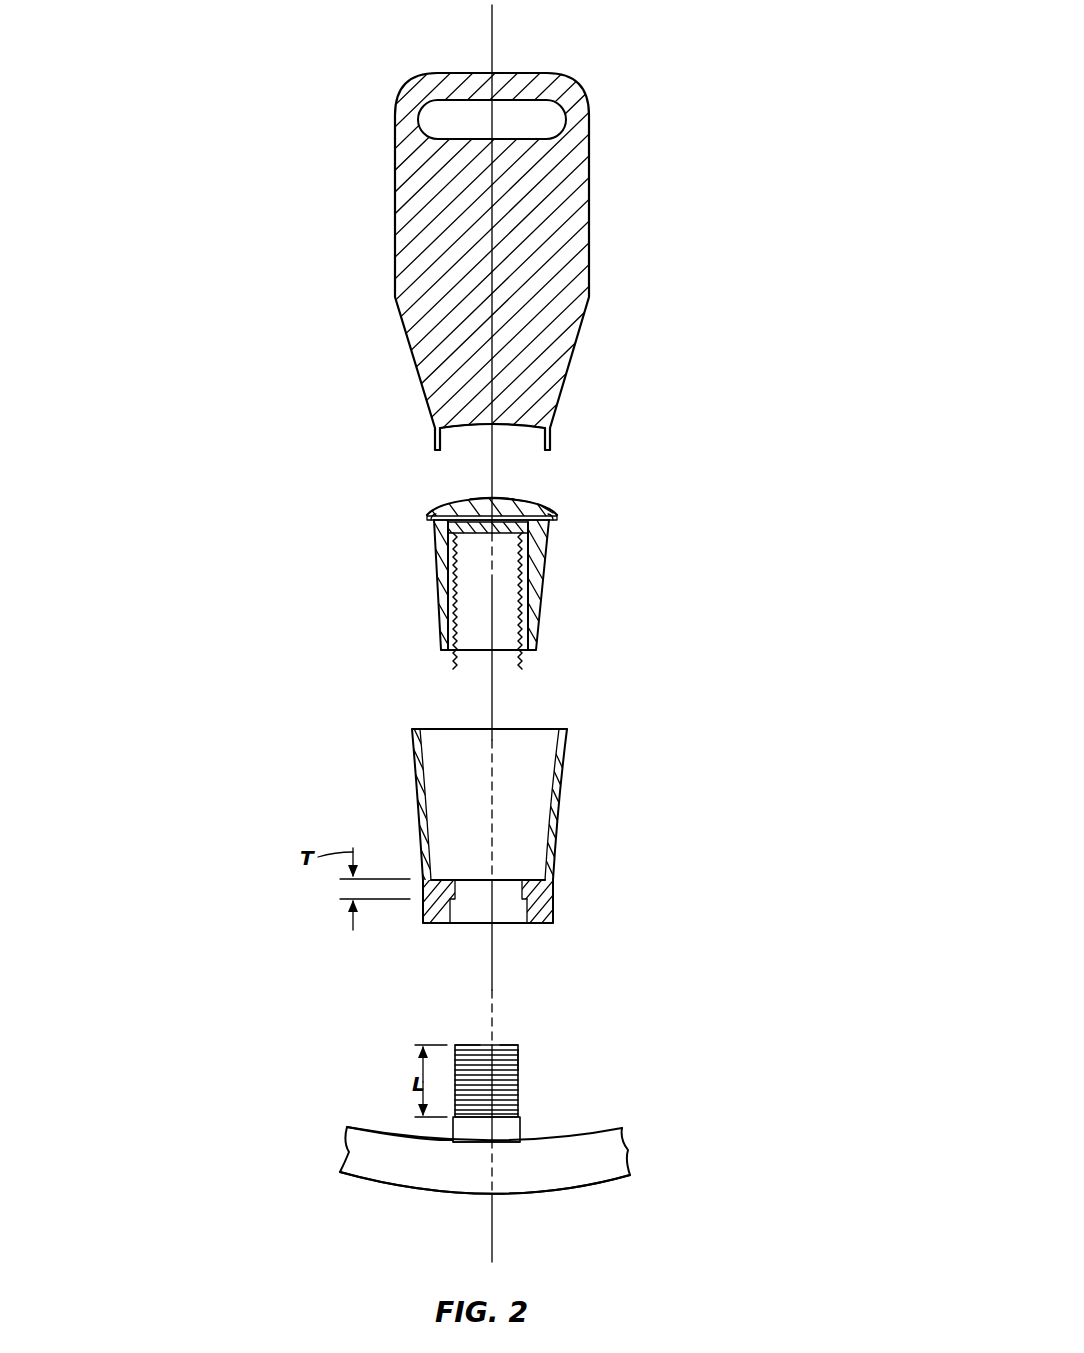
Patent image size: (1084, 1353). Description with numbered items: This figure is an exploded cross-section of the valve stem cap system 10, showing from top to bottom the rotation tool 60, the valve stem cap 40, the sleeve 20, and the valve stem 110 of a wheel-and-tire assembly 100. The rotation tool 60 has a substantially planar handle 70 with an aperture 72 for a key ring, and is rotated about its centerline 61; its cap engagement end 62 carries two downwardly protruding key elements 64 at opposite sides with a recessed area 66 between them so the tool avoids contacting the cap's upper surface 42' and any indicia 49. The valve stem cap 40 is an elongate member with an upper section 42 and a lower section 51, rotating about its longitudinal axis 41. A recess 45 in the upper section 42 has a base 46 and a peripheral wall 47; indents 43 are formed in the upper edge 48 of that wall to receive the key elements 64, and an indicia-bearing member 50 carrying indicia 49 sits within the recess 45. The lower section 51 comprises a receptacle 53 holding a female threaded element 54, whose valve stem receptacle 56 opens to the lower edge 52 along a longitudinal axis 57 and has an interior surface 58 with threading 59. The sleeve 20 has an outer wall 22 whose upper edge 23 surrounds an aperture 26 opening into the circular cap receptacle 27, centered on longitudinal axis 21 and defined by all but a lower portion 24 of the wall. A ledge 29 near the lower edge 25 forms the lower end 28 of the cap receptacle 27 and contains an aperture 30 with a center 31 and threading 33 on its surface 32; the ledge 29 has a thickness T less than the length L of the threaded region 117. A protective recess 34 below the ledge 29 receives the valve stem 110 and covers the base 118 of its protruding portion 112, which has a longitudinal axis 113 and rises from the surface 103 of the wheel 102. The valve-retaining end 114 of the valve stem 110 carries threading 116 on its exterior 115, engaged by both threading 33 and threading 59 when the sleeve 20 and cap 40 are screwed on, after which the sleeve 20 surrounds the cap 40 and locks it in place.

The valve stem cap system 10 is at (324, 62).
The rotation tool 60 is at (658, 82).
The handle 70 is at (596, 242).
The centerline 61 is at (492, 231).
The aperture 72 is at (530, 118).
The cap engagement end 62 is at (556, 426).
The recessed area 66 is at (468, 430).
The key element 64 is at (433, 446).
The valve stem cap 40 is at (686, 485).
The upper section 42 is at (539, 511).
The upper surface 42' is at (498, 467).
The indicia 49 is at (491, 508).
The indicia-bearing member 50 is at (522, 508).
The upper edge 48 is at (541, 510).
The indent 43 is at (553, 514).
The recess 45 is at (448, 514).
The peripheral wall 47 is at (445, 521).
The base 46 is at (446, 533).
The lower section 51 is at (575, 634).
The longitudinal axis 41 is at (445, 560).
The receptacle 53 is at (529, 577).
The female threaded element 54 is at (543, 600).
The longitudinal axis 57 is at (441, 585).
The valve stem receptacle 56 is at (503, 602).
The interior surface 58 is at (447, 623).
The threading 59 is at (452, 651).
The lower edge 52 is at (526, 651).
The sleeve 20 is at (684, 703).
The aperture 26 is at (525, 730).
The longitudinal axis 21 is at (415, 755).
The outer wall 22 is at (558, 795).
The upper edge 23 is at (567, 733).
The ledge 29 is at (429, 848).
The center 31 is at (530, 860).
The cap receptacle 27 is at (503, 801).
The lower end 28 is at (540, 880).
The surface 32 is at (555, 895).
The aperture 30 is at (440, 915).
The lower portion 24 is at (555, 918).
The threading 33 is at (500, 922).
The protective recess 34 is at (465, 922).
The lower edge 25 is at (532, 925).
The wheel-and-tire assembly 100 is at (318, 1058).
The valve stem 110 is at (516, 1020).
The threaded region 117 is at (538, 1079).
The valve-retaining end 114 is at (478, 1045).
The exterior 115 is at (522, 1050).
The threading 116 is at (521, 1062).
The protruding portion 112 is at (553, 1113).
The longitudinal axis 113 is at (455, 1134).
The surface 103 is at (385, 1128).
The wheel 102 is at (612, 1149).
The base 118 is at (470, 1145).